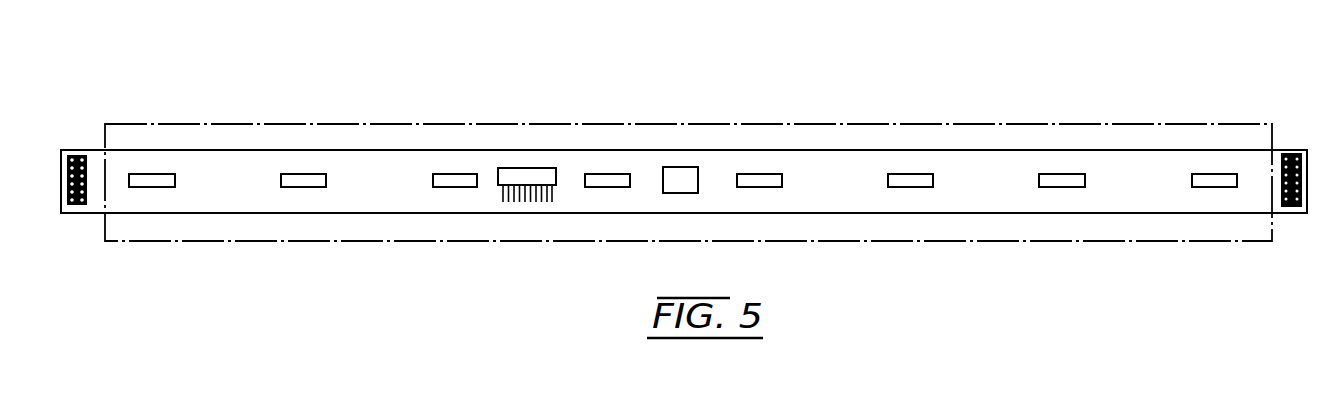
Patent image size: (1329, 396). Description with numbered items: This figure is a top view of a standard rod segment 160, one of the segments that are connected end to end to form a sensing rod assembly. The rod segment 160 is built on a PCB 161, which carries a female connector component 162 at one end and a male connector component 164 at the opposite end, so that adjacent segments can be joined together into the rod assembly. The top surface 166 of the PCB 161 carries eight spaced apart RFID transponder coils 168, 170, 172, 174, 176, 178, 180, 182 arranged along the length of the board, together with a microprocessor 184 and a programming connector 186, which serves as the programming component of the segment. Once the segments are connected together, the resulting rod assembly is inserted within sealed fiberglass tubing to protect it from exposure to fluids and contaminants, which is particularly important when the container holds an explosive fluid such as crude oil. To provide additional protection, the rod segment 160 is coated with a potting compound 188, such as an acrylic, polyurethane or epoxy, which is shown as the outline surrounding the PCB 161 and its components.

The standard rod segment 160 is at (684, 136).
The PCB 161 is at (868, 162).
The female connector component 162 is at (72, 153).
The male connector component 164 is at (1292, 153).
The top surface 166 is at (684, 146).
The RFID transponder coil 168 is at (158, 178).
The RFID transponder coil 170 is at (300, 177).
The RFID transponder coil 172 is at (455, 177).
The RFID transponder coil 174 is at (597, 177).
The RFID transponder coil 176 is at (762, 177).
The RFID transponder coil 178 is at (923, 177).
The RFID transponder coil 180 is at (1055, 177).
The RFID transponder coil 182 is at (1215, 172).
The microprocessor 184 is at (678, 168).
The programming connector 186 is at (530, 170).
The potting compound 188 is at (410, 122).